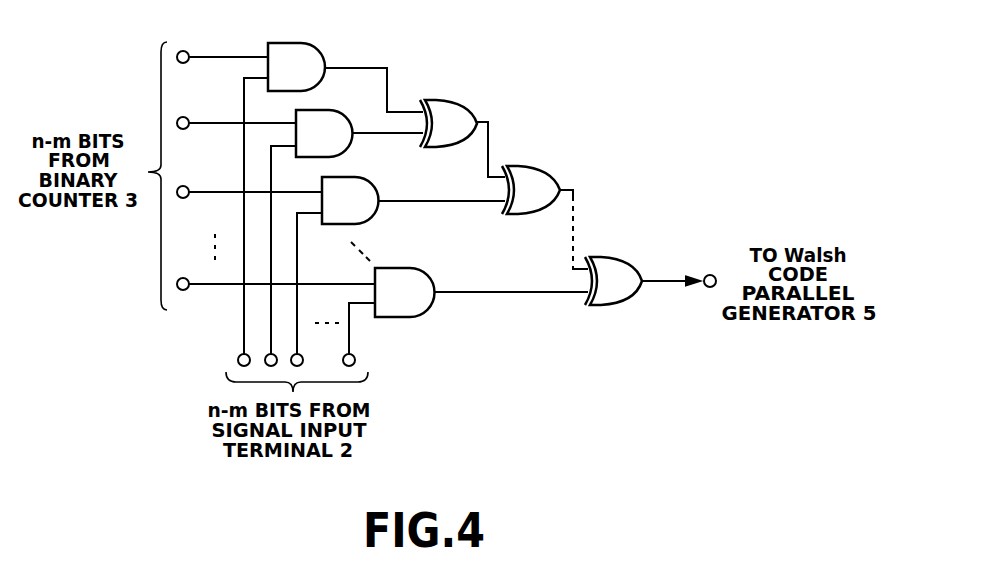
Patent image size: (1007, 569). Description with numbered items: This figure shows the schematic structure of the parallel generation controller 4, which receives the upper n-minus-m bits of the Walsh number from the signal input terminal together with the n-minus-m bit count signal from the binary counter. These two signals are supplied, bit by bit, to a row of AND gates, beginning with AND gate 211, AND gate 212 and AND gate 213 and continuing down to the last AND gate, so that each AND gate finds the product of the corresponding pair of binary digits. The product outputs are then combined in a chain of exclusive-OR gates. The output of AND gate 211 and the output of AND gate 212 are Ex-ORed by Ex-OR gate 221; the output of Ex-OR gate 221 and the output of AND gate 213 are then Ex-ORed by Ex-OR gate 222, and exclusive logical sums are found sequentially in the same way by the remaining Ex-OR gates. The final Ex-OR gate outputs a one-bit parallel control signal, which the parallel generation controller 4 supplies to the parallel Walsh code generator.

The AND gate 211 is at (302, 50).
The AND gate 212 is at (320, 113).
The AND gate 213 is at (380, 187).
The Ex-OR gate 221 is at (447, 103).
The Ex-OR gate 222 is at (527, 167).
The parallel generation controller 4 is at (549, 314).